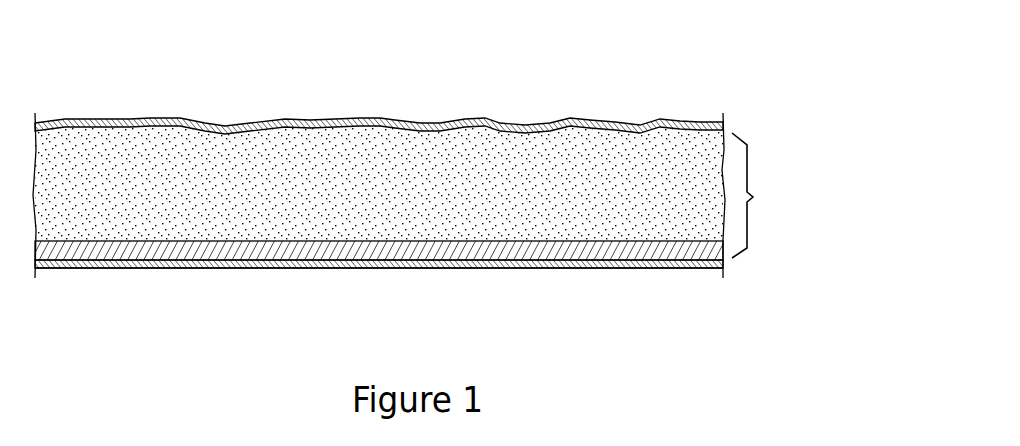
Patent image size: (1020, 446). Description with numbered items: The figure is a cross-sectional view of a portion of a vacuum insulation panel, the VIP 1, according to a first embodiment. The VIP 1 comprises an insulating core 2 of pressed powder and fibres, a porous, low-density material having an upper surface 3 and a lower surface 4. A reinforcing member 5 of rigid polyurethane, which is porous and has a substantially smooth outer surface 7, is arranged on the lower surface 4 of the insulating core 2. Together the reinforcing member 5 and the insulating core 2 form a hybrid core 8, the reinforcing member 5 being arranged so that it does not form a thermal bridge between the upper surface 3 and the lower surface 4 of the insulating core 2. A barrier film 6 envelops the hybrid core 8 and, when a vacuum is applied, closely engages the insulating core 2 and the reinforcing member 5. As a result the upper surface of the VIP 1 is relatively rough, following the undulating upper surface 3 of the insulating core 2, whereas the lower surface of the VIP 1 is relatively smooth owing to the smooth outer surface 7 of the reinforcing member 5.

The VIP 1 is at (457, 179).
The insulating core 2 is at (676, 157).
The upper surface 3 is at (391, 125).
The lower surface 4 is at (433, 242).
The reinforcing member 5 is at (690, 250).
The barrier film 6 is at (565, 121).
The outer surface 7 is at (131, 261).
The hybrid core 8 is at (426, 200).